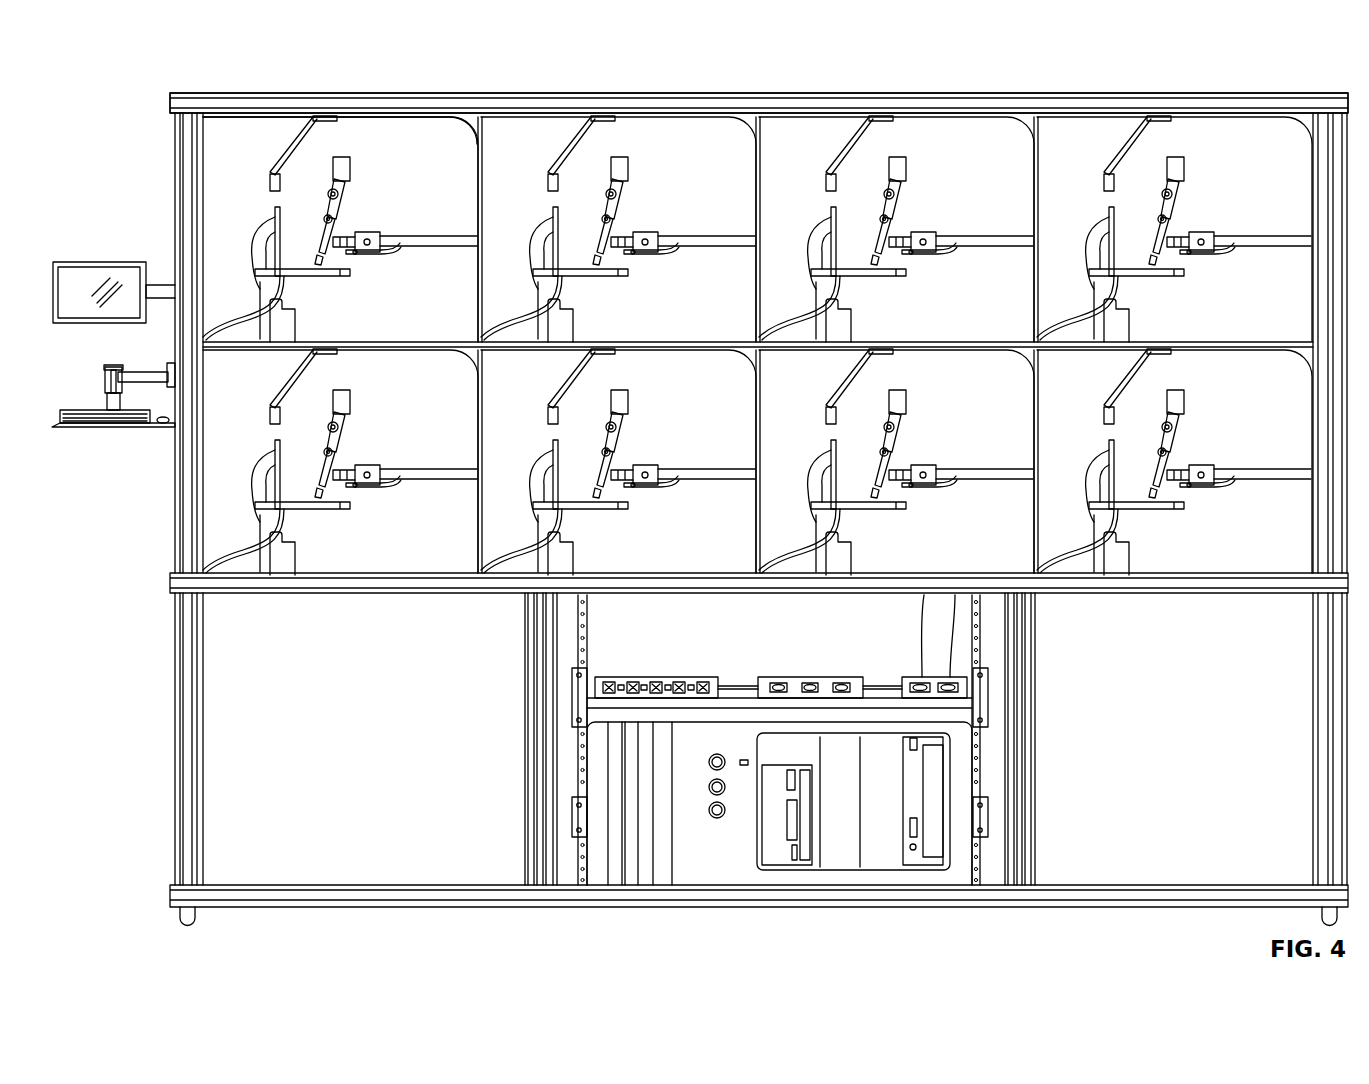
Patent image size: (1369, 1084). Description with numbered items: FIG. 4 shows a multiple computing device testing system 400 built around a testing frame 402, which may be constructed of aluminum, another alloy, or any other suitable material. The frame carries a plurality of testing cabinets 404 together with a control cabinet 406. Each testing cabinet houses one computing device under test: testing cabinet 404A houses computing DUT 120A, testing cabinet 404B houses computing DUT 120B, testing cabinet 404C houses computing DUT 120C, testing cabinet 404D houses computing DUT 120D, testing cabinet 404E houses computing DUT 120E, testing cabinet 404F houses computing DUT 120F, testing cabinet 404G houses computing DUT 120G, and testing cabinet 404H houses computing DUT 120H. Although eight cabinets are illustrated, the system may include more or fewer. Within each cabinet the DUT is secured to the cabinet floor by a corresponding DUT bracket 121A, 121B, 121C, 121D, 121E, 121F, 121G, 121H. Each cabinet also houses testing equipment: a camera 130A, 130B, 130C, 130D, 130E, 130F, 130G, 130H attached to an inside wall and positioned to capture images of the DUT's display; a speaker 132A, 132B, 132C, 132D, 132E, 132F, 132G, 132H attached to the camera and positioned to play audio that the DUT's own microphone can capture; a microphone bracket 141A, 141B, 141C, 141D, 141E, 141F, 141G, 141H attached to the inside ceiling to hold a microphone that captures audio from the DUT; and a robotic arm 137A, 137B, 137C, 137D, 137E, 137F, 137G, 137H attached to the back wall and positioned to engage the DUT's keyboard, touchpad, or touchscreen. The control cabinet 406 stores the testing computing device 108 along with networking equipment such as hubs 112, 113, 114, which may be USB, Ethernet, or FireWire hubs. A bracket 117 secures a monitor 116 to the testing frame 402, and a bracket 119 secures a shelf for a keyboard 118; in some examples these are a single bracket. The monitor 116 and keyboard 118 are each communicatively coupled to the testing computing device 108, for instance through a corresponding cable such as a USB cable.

The multiple computing device testing system 400 is at (215, 76).
The testing frame 402 is at (1208, 93).
The testing cabinets 404 is at (440, 132).
The testing cabinet 404A is at (260, 213).
The testing cabinet 404B is at (618, 229).
The testing cabinet 404C is at (896, 229).
The testing cabinet 404D is at (1174, 229).
The testing cabinet 404E is at (340, 461).
The testing cabinet 404F is at (618, 461).
The testing cabinet 404G is at (896, 461).
The testing cabinet 404H is at (1174, 461).
The control cabinet 406 is at (602, 605).
The testing computing device 108 is at (877, 827).
The hub 112 is at (657, 677).
The hub 113 is at (808, 677).
The hub 114 is at (908, 677).
The monitor 116 is at (121, 261).
The bracket 117 is at (160, 285).
The keyboard 118 is at (128, 430).
The bracket 119 is at (140, 370).
The computing DUT 120A is at (242, 216).
The computing DUT 120B is at (520, 216).
The computing DUT 120C is at (798, 216).
The computing DUT 120D is at (1076, 216).
The computing DUT 120E is at (242, 449).
The computing DUT 120F is at (520, 449).
The computing DUT 120G is at (798, 449).
The computing DUT 120H is at (1076, 449).
The DUT bracket 121A is at (331, 319).
The DUT bracket 121B is at (609, 319).
The DUT bracket 121C is at (887, 319).
The DUT bracket 121D is at (1166, 319).
The DUT bracket 121E is at (330, 552).
The DUT bracket 121F is at (608, 552).
The DUT bracket 121G is at (888, 552).
The DUT bracket 121H is at (1166, 552).
The camera 130A is at (405, 228).
The camera 130B is at (683, 228).
The camera 130C is at (961, 228).
The camera 130D is at (1239, 228).
The camera 130E is at (405, 461).
The camera 130F is at (683, 461).
The camera 130G is at (961, 461).
The camera 130H is at (1239, 461).
The speaker 132A is at (394, 265).
The speaker 132B is at (672, 265).
The speaker 132C is at (950, 265).
The speaker 132D is at (1229, 265).
The speaker 132E is at (393, 498).
The speaker 132F is at (670, 498).
The speaker 132G is at (951, 498).
The speaker 132H is at (1228, 498).
The robotic arm 137A is at (382, 205).
The robotic arm 137B is at (660, 205).
The robotic arm 137C is at (938, 205).
The robotic arm 137D is at (1217, 205).
The robotic arm 137E is at (381, 438).
The robotic arm 137F is at (659, 438).
The robotic arm 137G is at (939, 438).
The robotic arm 137H is at (1217, 438).
The microphone bracket 141A is at (271, 153).
The microphone bracket 141B is at (549, 153).
The microphone bracket 141C is at (827, 153).
The microphone bracket 141D is at (1105, 153).
The microphone bracket 141E is at (271, 386).
The microphone bracket 141F is at (549, 386).
The microphone bracket 141G is at (827, 386).
The microphone bracket 141H is at (1105, 386).